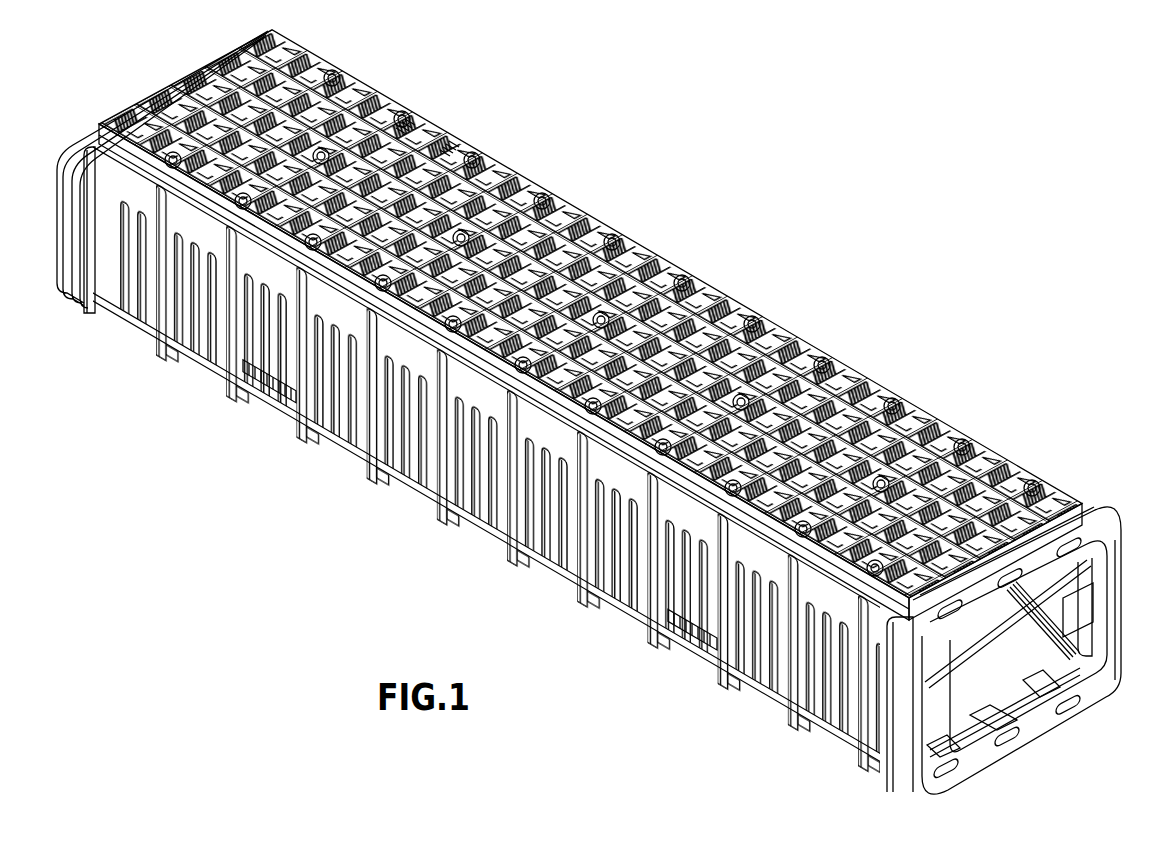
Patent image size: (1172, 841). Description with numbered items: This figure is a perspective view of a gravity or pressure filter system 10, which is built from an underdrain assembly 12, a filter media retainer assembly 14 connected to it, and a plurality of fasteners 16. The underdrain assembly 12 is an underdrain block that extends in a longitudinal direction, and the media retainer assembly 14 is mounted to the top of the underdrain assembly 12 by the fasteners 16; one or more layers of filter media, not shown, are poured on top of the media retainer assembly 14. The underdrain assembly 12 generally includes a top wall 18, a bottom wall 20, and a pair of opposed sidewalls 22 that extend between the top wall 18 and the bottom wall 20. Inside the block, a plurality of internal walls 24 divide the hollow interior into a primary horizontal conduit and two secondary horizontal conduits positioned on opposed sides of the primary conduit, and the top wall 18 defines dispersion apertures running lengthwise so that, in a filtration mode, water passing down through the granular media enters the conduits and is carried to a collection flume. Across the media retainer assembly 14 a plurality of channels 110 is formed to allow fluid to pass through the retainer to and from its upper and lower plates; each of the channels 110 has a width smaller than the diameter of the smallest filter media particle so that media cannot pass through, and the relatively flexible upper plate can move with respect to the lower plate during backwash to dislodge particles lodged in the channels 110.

The filter system 10 is at (728, 190).
The underdrain assembly 12 is at (482, 525).
The filter media retainer assembly 14 is at (577, 208).
The fasteners 16 is at (826, 358).
The top wall 18 is at (1093, 523).
The bottom wall 20 is at (1023, 743).
The sidewalls 22 is at (902, 703).
The internal walls 24 is at (1017, 620).
The channels 110 is at (446, 151).